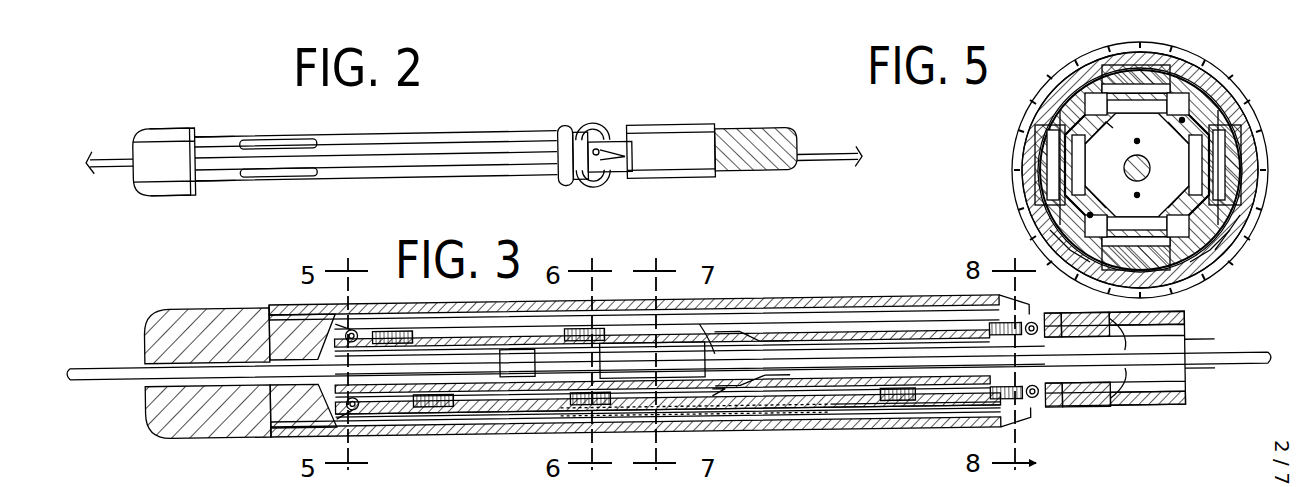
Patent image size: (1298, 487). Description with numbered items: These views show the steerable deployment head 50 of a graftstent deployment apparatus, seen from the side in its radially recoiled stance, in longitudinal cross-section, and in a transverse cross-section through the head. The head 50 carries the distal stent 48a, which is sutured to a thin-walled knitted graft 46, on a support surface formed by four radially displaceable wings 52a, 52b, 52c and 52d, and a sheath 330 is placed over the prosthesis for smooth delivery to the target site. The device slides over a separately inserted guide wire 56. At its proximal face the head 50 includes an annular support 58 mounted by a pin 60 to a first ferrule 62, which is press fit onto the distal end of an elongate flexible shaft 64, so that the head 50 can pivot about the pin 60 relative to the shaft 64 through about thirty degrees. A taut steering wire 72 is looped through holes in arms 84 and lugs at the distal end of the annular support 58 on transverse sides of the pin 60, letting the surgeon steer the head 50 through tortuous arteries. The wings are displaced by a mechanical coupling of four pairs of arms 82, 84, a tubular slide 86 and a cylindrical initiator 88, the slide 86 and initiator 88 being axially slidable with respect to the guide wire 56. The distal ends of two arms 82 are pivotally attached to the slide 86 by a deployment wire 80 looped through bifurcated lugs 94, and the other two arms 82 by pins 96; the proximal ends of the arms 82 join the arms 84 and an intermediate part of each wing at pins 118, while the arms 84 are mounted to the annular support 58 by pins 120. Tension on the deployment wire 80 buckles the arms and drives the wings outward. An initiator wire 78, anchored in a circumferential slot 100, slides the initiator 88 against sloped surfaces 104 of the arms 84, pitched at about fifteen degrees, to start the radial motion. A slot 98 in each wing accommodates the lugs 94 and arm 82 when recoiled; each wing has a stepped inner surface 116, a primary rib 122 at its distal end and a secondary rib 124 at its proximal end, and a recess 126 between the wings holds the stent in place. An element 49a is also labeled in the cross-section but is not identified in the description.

In FIG. 3, the graft 46 is at (803, 437).
In FIG. 3, the distal stent 48a is at (505, 340).
In FIG. 5, the housing wall 49a is at (1035, 145).
In FIG. 2, the head 50 is at (447, 192).
In FIG. 2, the wing 52a is at (142, 138).
In FIG. 3, the wing 52a is at (172, 315).
In FIG. 5, the wing 52a is at (1205, 92).
In FIG. 2, the wing 52b is at (226, 181).
In FIG. 5, the wing 52b is at (1200, 262).
In FIG. 3, the wing 52c is at (155, 430).
In FIG. 5, the wing 52c is at (1050, 240).
In FIG. 5, the wing 52d is at (1075, 73).
In FIG. 2, the guide wire 56 is at (815, 140).
In FIG. 3, the guide wire 56 is at (86, 366).
In FIG. 5, the guide wire 56 is at (1140, 195).
In FIG. 2, the annular support 58 is at (580, 140).
In FIG. 3, the annular support 58 is at (1095, 418).
In FIG. 2, the pin 60 is at (625, 158).
In FIG. 3, the pin 60 is at (1048, 420).
In FIG. 2, the first ferrule 62 is at (690, 130).
In FIG. 3, the first ferrule 62 is at (1172, 417).
In FIG. 2, the elongate flexible shaft 64 is at (755, 165).
In FIG. 2, the steering wire 72 is at (604, 118).
In FIG. 3, the initiator wire 78 is at (652, 360).
In FIG. 5, the deployment wire 80 is at (1060, 122).
In FIG. 3, the coupling arm 82 is at (432, 340).
In FIG. 5, the coupling arm 82 is at (1045, 168).
In FIG. 3, the coupling arm 84 is at (890, 305).
In FIG. 3, the tubular slide 86 is at (436, 420).
In FIG. 5, the tubular slide 86 is at (1222, 235).
In FIG. 3, the initiator 88 is at (712, 320).
In FIG. 5, the bifurcated lugs 94 is at (1165, 72).
In FIG. 5, the pins 96 is at (1232, 120).
In FIG. 2, the slot 98 is at (275, 172).
In FIG. 3, the slot 98 is at (338, 330).
In FIG. 3, the circumferential slot 100 is at (708, 422).
In FIG. 3, the sloped surfaces 104 is at (735, 355).
In FIG. 5, the stepped inner surface 116 is at (1030, 200).
In FIG. 3, the pins 118 is at (536, 362).
In FIG. 3, the pins 120 is at (1025, 339).
In FIG. 2, the primary rib 122 is at (175, 128).
In FIG. 3, the primary rib 122 is at (268, 305).
In FIG. 2, the secondary rib 124 is at (563, 140).
In FIG. 3, the secondary rib 124 is at (1008, 312).
In FIG. 2, the recess 126 is at (400, 160).
In FIG. 3, the recess 126 is at (304, 437).
In FIG. 3, the sheath 330 is at (780, 305).